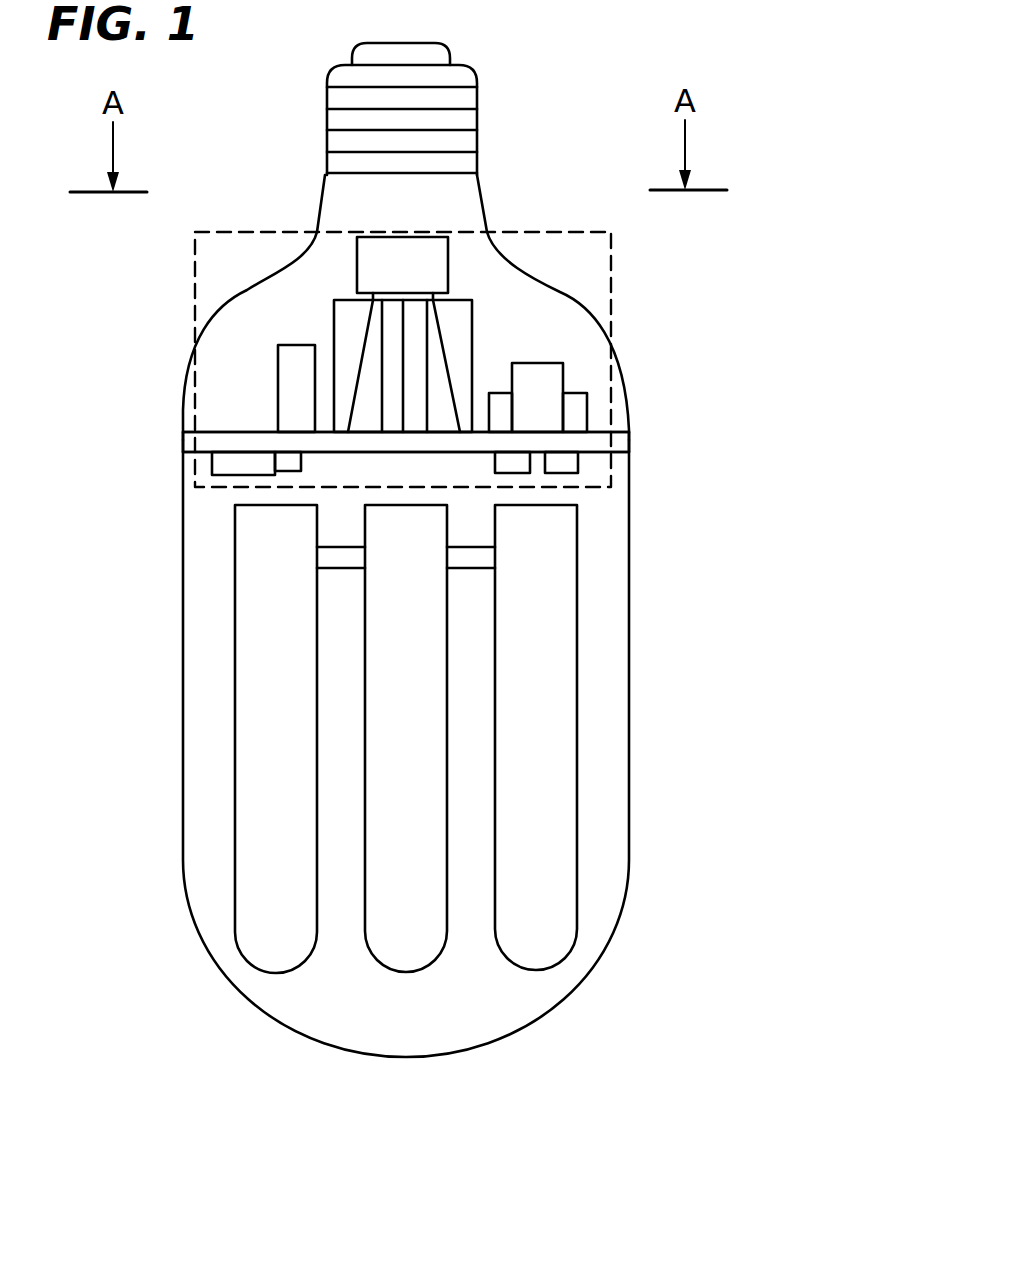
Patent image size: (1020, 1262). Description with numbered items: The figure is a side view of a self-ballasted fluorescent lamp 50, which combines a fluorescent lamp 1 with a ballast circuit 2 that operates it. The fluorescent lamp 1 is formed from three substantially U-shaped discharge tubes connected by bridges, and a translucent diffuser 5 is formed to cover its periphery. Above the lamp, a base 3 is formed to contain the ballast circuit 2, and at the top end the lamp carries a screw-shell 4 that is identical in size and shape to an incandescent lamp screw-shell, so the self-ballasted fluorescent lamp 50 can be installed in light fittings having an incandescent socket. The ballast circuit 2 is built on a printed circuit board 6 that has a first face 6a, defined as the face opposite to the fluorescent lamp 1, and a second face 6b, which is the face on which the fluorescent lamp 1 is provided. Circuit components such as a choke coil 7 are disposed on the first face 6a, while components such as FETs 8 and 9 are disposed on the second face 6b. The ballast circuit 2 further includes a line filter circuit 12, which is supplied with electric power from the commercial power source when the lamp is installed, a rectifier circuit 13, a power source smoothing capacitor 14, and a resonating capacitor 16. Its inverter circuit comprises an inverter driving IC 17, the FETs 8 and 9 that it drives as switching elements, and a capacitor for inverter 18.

The self-ballasted fluorescent lamp 50 is at (800, 1012).
The fluorescent lamp 1 is at (583, 882).
The ballast circuit 2 is at (611, 290).
The base 3 is at (480, 193).
The screw-shell 4 is at (478, 92).
The diffuser 5 is at (630, 672).
The printed circuit board 6 is at (200, 442).
The first face 6a is at (213, 430).
The second face 6b is at (197, 457).
The choke coil 7 is at (474, 323).
The FET 8 is at (523, 473).
The FET 9 is at (578, 457).
The line filter circuit 12 is at (278, 375).
The rectifier circuit 13 is at (236, 476).
The power source smoothing capacitor 14 is at (358, 248).
The resonating capacitor 16 is at (588, 413).
The inverter driving IC 17 is at (287, 476).
The capacitor for inverter 18 is at (557, 360).